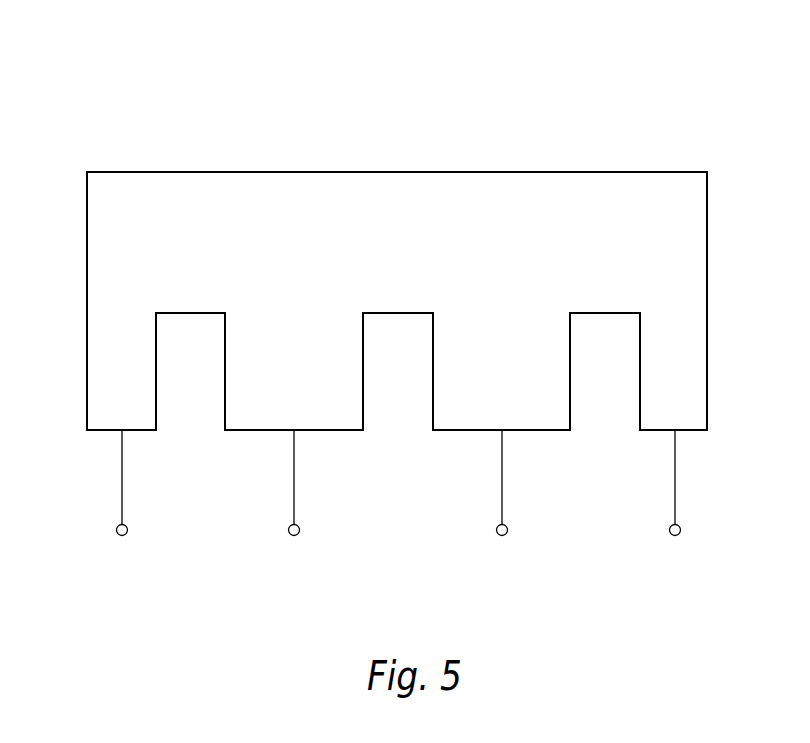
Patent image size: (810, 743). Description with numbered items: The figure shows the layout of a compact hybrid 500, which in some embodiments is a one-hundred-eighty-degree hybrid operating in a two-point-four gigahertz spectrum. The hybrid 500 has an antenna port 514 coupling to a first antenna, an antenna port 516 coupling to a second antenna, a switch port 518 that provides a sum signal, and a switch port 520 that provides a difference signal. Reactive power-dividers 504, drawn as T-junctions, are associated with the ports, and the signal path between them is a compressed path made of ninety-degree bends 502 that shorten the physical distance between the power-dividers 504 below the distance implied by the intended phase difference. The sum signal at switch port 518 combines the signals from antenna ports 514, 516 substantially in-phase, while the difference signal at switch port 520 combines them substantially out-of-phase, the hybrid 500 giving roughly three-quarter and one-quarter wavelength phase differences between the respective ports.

The compact hybrid 500 is at (724, 58).
The 90-degree bends 502 is at (87, 171).
The reactive power-dividers 504 is at (122, 429).
The antenna port 514 is at (675, 536).
The antenna port 516 is at (294, 536).
The switch port 518 is at (502, 536).
The switch port 520 is at (122, 536).